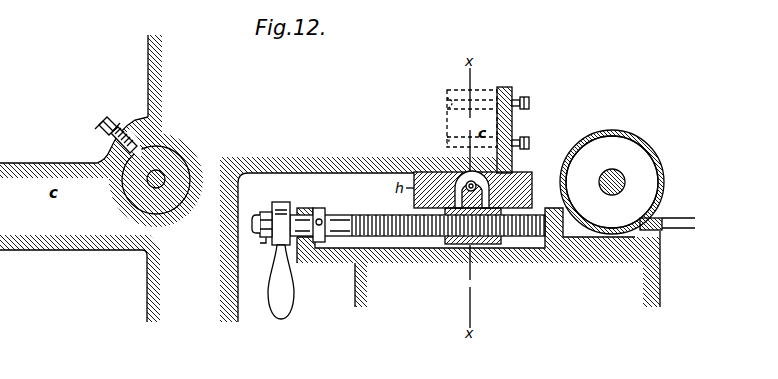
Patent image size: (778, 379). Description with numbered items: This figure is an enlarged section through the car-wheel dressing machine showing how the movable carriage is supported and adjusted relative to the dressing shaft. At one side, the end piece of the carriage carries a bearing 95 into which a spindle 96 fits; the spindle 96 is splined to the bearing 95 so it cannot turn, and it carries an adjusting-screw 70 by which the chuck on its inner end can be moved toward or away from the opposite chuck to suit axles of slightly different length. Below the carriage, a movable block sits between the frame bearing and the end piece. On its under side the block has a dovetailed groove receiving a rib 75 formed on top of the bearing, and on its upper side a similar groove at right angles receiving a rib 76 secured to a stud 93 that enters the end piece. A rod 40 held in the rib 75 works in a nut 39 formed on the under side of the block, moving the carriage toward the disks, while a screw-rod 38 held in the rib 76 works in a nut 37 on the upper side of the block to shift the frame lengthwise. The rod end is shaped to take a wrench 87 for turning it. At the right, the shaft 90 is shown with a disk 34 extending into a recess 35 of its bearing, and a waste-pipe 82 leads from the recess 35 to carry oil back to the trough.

The disk 34 is at (612, 182).
The recess 35 is at (594, 134).
The nut 37 is at (476, 171).
The screw-rod 38 is at (466, 170).
The nut 39 is at (446, 241).
The rod 40 is at (345, 237).
The adjusting-screw 70 is at (168, 170).
The rib 75 is at (359, 214).
The rib 76 is at (458, 170).
The waste-pipe 82 is at (684, 223).
The wrench 87 is at (277, 288).
The shaft 90 is at (609, 170).
The stud 93 is at (447, 94).
The bearing 95 is at (138, 123).
The spindle 96 is at (134, 200).